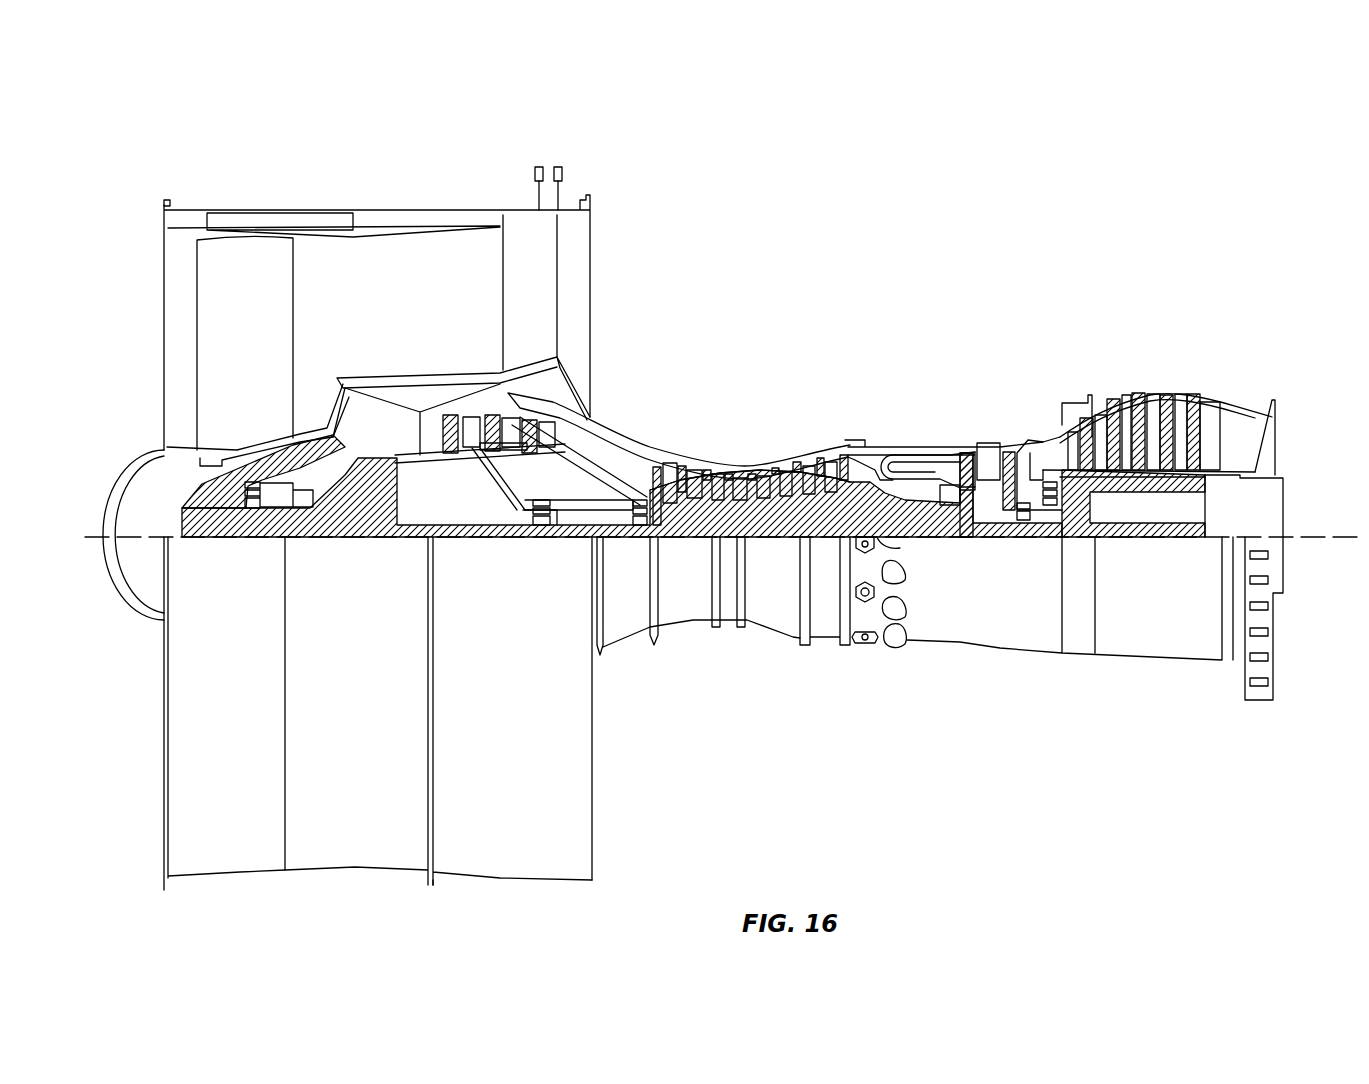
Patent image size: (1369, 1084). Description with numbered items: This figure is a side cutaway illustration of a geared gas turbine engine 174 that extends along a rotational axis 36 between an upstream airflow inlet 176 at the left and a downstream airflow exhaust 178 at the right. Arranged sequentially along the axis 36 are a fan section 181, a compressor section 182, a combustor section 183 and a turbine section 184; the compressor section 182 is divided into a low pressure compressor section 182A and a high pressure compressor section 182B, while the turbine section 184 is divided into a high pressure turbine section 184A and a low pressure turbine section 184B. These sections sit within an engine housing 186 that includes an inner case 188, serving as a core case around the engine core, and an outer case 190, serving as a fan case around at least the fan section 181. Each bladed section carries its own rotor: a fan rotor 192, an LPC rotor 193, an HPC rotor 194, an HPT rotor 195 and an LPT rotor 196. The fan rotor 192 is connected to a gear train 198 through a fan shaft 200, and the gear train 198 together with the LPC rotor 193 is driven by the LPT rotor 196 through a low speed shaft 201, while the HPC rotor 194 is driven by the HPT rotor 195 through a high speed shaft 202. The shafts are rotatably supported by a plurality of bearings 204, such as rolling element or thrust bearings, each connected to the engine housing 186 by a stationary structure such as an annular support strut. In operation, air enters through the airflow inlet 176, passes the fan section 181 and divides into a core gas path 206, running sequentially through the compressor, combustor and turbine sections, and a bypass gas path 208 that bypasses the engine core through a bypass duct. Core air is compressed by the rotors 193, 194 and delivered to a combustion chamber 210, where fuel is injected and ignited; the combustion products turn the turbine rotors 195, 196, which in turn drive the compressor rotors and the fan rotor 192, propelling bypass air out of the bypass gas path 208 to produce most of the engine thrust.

The geared gas turbine engine 174 is at (128, 185).
The upstream airflow inlet 176 is at (163, 286).
The downstream airflow exhaust 178 is at (1275, 432).
The fan section 181 is at (167, 182).
The compressor section 182 is at (418, 122).
The low pressure compressor section 182A is at (593, 168).
The high pressure compressor section 182B is at (823, 370).
The combustor section 183 is at (845, 370).
The turbine section 184 is at (958, 297).
The high pressure turbine section 184A is at (1040, 370).
The low pressure turbine section 184B is at (1230, 370).
The engine housing 186 is at (621, 667).
The inner case 188 is at (824, 645).
The outer case 190 is at (545, 880).
The fan rotor 192 is at (167, 452).
The LPC rotor 193 is at (490, 497).
The HPC rotor 194 is at (763, 500).
The HPT rotor 195 is at (983, 528).
The LPT rotor 196 is at (1140, 478).
The gear train 198 is at (378, 538).
The fan shaft 200 is at (234, 535).
The low speed shaft 201 is at (1150, 538).
The high speed shaft 202 is at (916, 528).
The bearings 204 is at (286, 516).
The core gas path 206 is at (617, 461).
The bypass gas path 208 is at (424, 311).
The combustion chamber 210 is at (912, 468).
The rotational axis 36 is at (1341, 550).